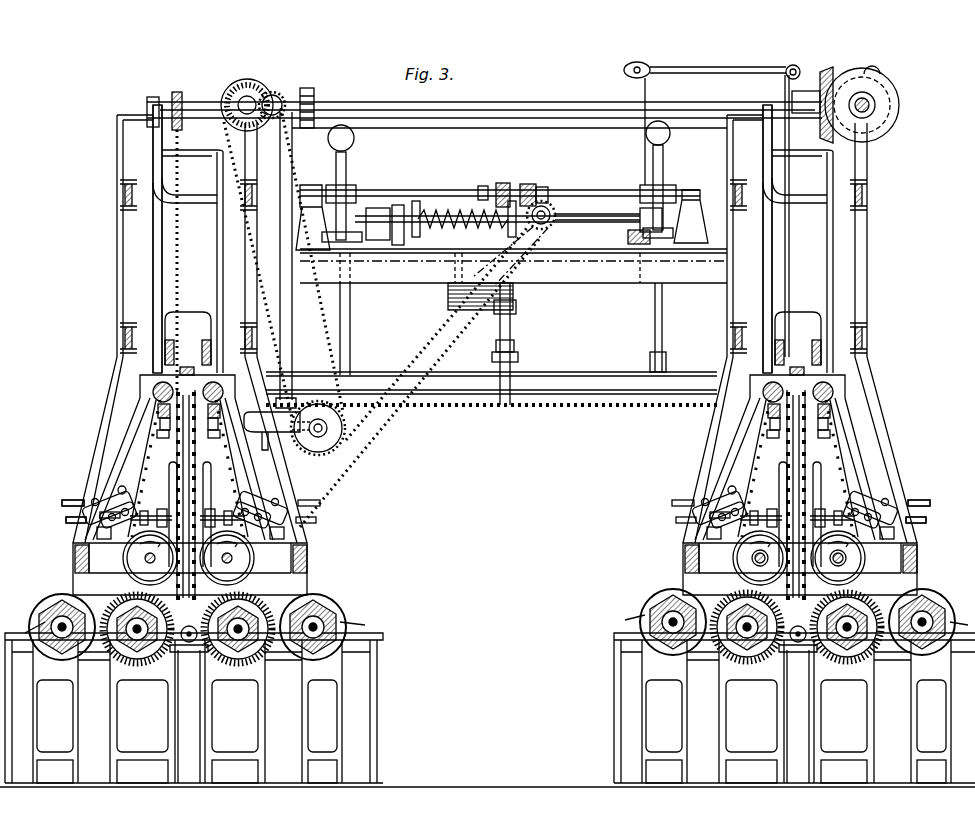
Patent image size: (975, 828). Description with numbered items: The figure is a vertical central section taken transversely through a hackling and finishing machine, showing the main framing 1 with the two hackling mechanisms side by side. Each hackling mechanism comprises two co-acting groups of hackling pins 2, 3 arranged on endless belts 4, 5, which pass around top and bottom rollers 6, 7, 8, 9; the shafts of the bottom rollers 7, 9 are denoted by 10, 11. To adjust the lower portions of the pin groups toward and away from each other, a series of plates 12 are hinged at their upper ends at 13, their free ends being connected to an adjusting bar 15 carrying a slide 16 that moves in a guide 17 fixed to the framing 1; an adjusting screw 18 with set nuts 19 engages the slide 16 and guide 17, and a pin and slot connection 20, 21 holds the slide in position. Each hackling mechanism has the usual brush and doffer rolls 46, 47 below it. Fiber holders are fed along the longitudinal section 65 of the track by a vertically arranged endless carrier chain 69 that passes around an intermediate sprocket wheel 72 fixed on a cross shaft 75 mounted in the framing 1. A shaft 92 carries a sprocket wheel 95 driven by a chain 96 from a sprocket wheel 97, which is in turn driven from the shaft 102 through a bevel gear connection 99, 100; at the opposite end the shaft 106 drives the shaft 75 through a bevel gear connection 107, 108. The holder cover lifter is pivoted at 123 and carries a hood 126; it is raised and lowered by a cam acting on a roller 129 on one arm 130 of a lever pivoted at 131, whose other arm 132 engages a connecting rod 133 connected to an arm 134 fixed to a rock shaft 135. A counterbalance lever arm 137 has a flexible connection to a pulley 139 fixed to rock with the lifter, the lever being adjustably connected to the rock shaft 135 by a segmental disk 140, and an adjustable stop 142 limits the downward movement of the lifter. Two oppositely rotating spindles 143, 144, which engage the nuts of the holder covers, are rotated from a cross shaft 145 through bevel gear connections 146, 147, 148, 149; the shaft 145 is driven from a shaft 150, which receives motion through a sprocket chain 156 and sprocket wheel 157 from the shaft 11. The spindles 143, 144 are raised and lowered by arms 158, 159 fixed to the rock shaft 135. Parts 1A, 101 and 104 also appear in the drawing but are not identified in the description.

The main framing 1 is at (115, 406).
The guide bar 1A is at (822, 437).
The hackling pins 2 is at (832, 407).
The hackling pins 3 is at (745, 455).
The endless belt 4 is at (493, 468).
The endless belt 5 is at (232, 485).
The top roller 6 is at (824, 398).
The bottom roller 7 is at (831, 560).
The top roller 8 is at (770, 410).
The bottom roller 9 is at (762, 560).
The shaft 10 is at (148, 560).
The shaft 11 is at (230, 560).
The plates 12 is at (177, 492).
The hinge 13 is at (826, 420).
The adjusting bar 15 is at (780, 492).
The slide 16 is at (108, 530).
The guide 17 is at (115, 498).
The adjusting screw 18 is at (82, 503).
The set nuts 19 is at (78, 520).
The pin 20 is at (730, 487).
The slot 21 is at (718, 516).
The brush roll 46 is at (140, 668).
The doffer roll 47 is at (66, 660).
The longitudinal section of the track 65 is at (165, 355).
The chain 69 is at (483, 239).
The intermediate sprocket wheel 72 is at (785, 90).
The cross shaft 75 is at (466, 104).
The shaft 92 is at (322, 434).
The sprocket wheel 95 is at (338, 440).
The chain 96 is at (250, 262).
The sprocket wheel 97 is at (238, 82).
The bevel gear 99 is at (252, 82).
The bevel gear 100 is at (274, 92).
The chain sprocket 101 is at (176, 94).
The shaft 102 is at (198, 101).
The pinion 104 is at (312, 92).
The shaft 106 is at (872, 108).
The bevel gear 107 is at (846, 80).
The bevel gear 108 is at (835, 70).
The pivot 123 is at (548, 372).
The hood 126 is at (512, 292).
The roller 129 is at (882, 73).
The lever arm 130 is at (810, 90).
The pivot 131 is at (793, 65).
The lever arm 132 is at (650, 66).
The connecting rod 133 is at (646, 133).
The arm 134 is at (650, 185).
The rock shaft 135 is at (446, 208).
The counterbalance lever arm 137 is at (505, 190).
The pulley 139 is at (498, 364).
The segmental disk 140 is at (488, 180).
The adjustable stop 142 is at (511, 336).
The spindle 143 is at (646, 327).
The spindle 144 is at (350, 310).
The cross shaft 145 is at (592, 214).
The bevel gear 146 is at (650, 244).
The bevel gear 147 is at (645, 232).
The bevel gear 148 is at (356, 242).
The bevel gear 149 is at (385, 212).
The shaft 150 is at (552, 224).
The sprocket chain 156 is at (390, 424).
The sprocket wheel 157 is at (543, 200).
The arm 158 is at (680, 200).
The arm 159 is at (350, 192).